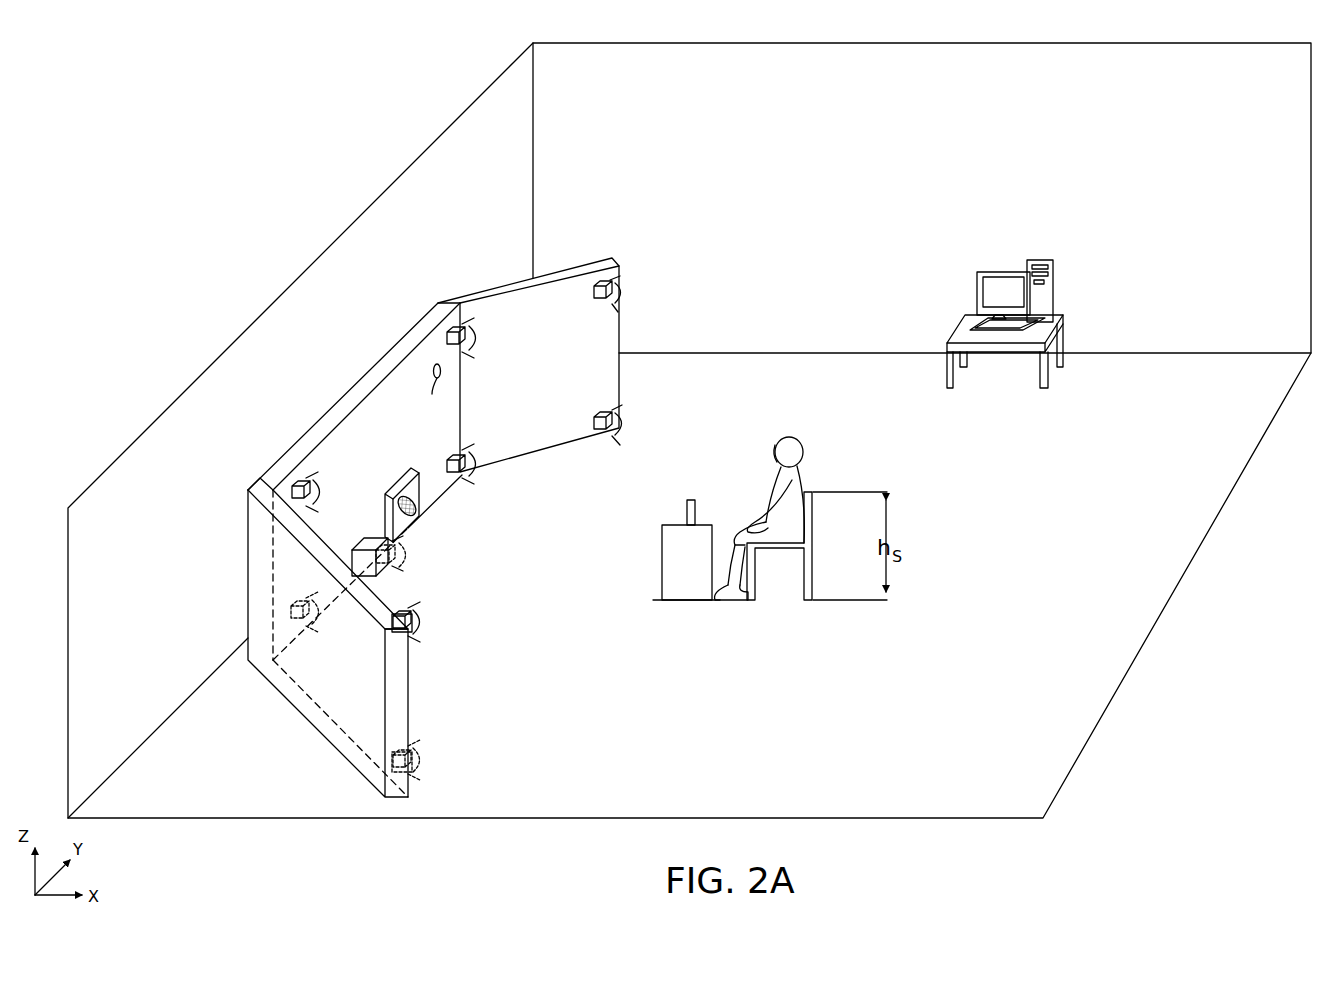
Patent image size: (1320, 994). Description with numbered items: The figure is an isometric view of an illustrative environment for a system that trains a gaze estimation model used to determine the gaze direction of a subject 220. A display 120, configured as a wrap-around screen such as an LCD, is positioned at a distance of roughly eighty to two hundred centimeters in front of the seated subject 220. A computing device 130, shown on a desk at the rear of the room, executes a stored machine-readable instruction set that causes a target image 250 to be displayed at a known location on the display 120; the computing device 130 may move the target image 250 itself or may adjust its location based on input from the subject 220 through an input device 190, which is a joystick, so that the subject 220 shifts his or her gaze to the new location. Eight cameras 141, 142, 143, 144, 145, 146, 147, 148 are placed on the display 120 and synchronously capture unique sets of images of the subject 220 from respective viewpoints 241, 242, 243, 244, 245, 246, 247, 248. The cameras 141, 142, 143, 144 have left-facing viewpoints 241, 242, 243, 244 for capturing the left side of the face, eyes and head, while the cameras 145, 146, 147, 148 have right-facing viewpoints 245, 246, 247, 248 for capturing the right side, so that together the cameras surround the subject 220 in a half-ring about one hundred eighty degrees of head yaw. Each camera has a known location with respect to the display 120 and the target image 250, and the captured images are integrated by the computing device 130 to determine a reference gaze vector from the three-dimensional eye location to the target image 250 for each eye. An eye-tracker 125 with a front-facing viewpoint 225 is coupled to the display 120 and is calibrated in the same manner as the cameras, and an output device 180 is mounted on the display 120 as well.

The display 120 is at (372, 408).
The eye-tracker 125 is at (362, 548).
The computing device 130 is at (1058, 275).
The camera 141 is at (412, 632).
The camera 142 is at (412, 768).
The camera 143 is at (292, 488).
The camera 144 is at (298, 604).
The camera 145 is at (448, 330).
The camera 146 is at (462, 452).
The camera 147 is at (592, 298).
The camera 148 is at (594, 424).
The output device 180 is at (398, 492).
The input device 190 is at (690, 498).
The subject 220 is at (822, 440).
The front-facing viewpoint 225 is at (404, 552).
The left-facing viewpoint 241 is at (420, 612).
The left-facing viewpoint 242 is at (420, 750).
The left-facing viewpoint 243 is at (312, 492).
The left-facing viewpoint 244 is at (312, 615).
The right-facing viewpoint 245 is at (468, 345).
The right-facing viewpoint 246 is at (472, 470).
The right-facing viewpoint 247 is at (615, 298).
The right-facing viewpoint 248 is at (602, 430).
The target image 250 is at (432, 380).